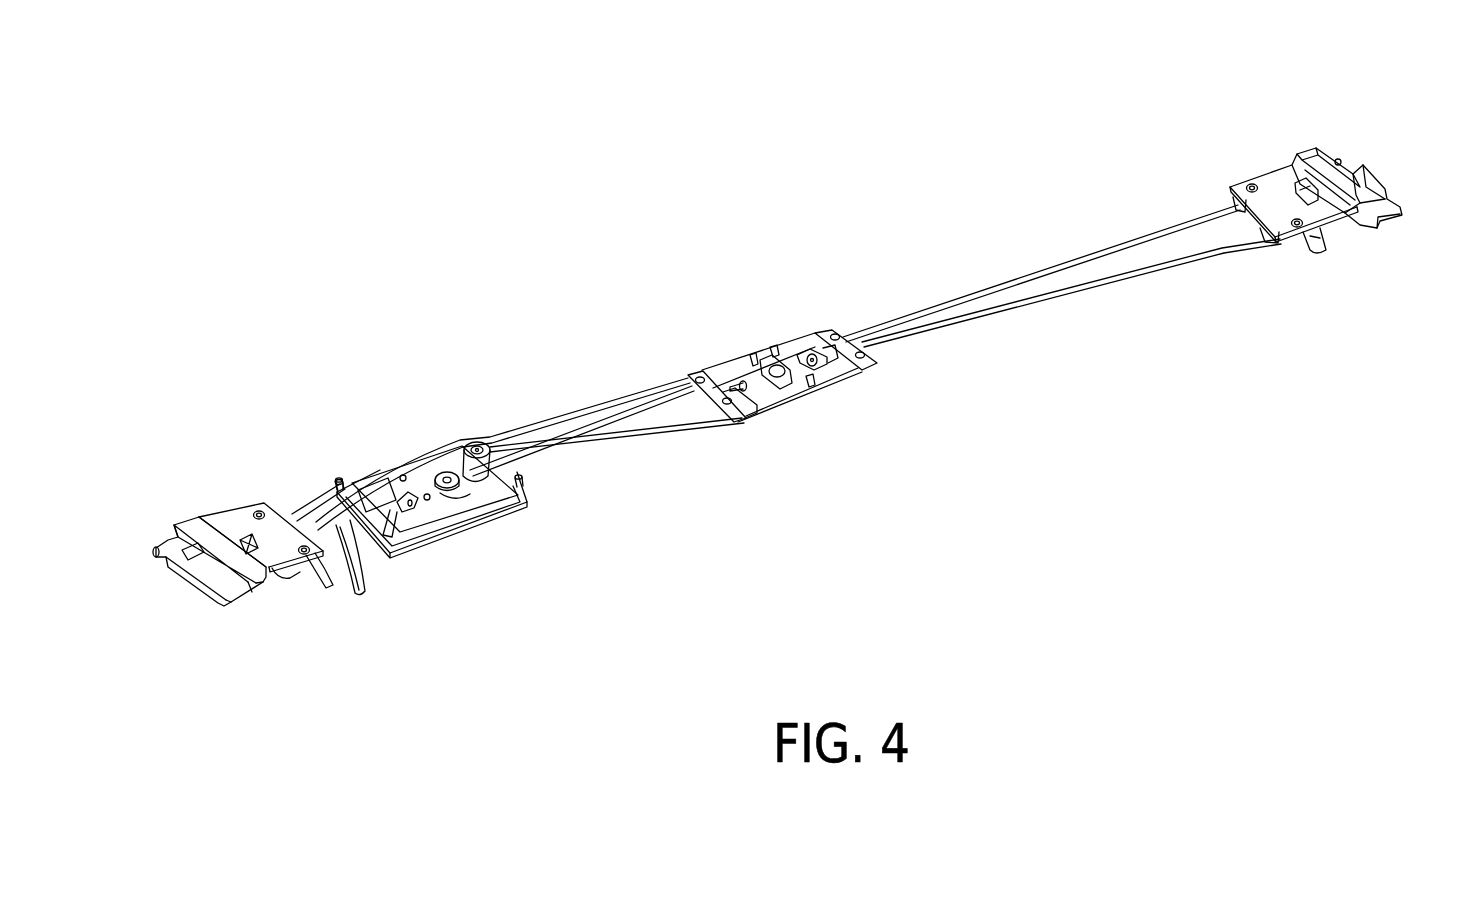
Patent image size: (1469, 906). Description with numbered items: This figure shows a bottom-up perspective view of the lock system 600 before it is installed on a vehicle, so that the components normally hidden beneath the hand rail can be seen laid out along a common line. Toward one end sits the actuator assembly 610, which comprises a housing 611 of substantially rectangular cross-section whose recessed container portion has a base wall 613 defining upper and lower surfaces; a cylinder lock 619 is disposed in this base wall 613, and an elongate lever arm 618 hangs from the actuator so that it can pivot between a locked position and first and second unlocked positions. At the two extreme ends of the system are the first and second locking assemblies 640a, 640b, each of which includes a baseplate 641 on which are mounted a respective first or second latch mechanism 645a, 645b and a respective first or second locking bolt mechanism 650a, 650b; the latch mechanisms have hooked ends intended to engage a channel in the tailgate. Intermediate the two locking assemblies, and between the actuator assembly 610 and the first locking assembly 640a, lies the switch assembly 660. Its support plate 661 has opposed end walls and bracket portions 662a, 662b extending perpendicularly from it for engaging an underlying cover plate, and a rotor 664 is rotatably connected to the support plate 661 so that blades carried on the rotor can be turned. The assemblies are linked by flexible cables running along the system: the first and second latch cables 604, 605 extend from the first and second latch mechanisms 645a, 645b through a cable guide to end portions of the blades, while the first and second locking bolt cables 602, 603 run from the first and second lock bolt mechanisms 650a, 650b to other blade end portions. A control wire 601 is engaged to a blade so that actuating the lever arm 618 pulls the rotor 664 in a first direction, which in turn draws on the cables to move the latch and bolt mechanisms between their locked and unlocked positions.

The lock system 600 is at (430, 277).
The control wire 601 is at (652, 385).
The first locking bolt cable 602 is at (598, 444).
The second locking bolt cable 603 is at (1030, 276).
The first latch cable 604 is at (572, 405).
The second latch cable 605 is at (955, 325).
The actuator assembly 610 is at (439, 585).
The housing 611 is at (482, 508).
The base wall 613 is at (415, 470).
The lever arm 618 is at (357, 590).
The cylinder lock 619 is at (470, 440).
The first locking assembly 640a is at (258, 634).
The second locking assembly 640b is at (1333, 294).
The baseplate 641 is at (1283, 177).
The first latch mechanism 645a is at (316, 606).
The second latch mechanism 645b is at (1360, 268).
The first locking bolt mechanism 650a is at (186, 598).
The second locking bolt mechanism 650b is at (1386, 157).
The switch assembly 660 is at (783, 473).
The support plate 661 is at (836, 382).
The first bracket portion 662a is at (706, 376).
The second bracket portion 662b is at (828, 336).
The rotor 664 is at (768, 350).